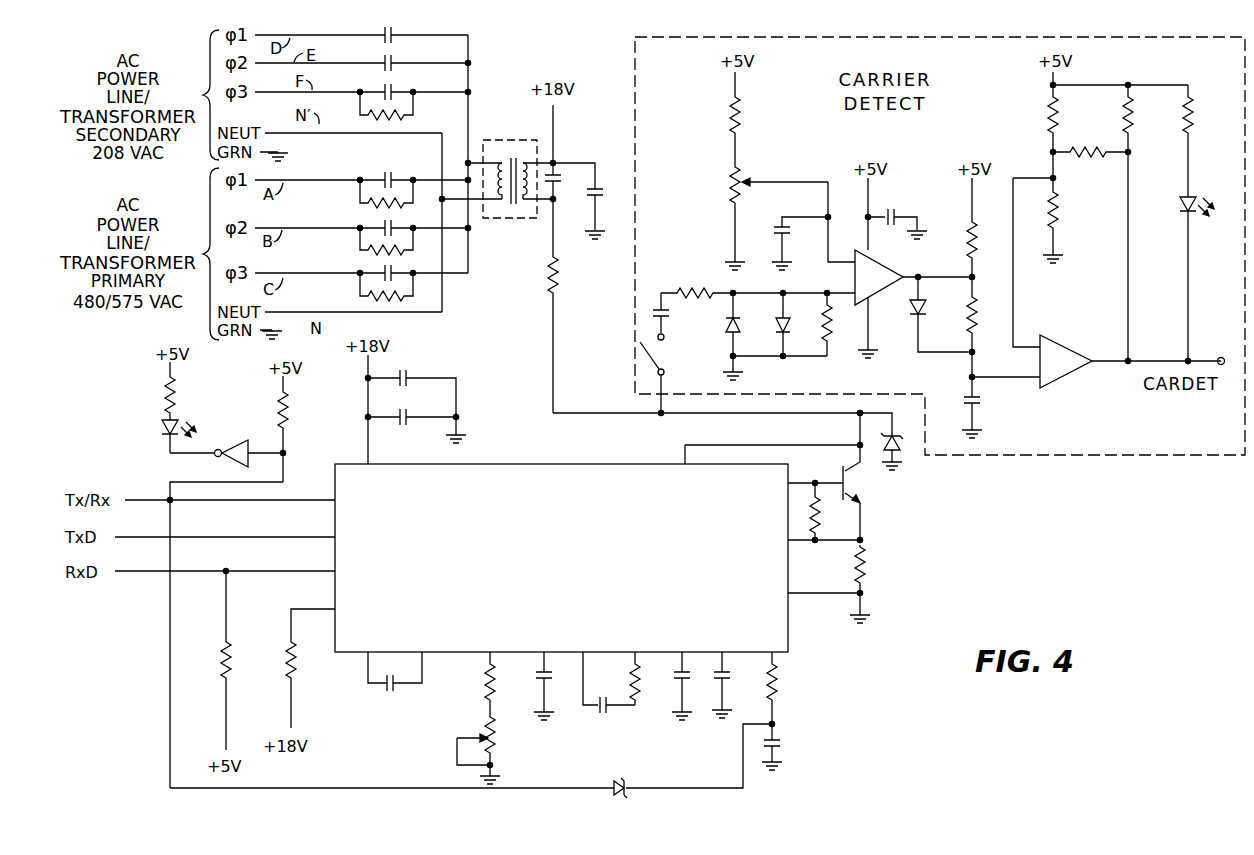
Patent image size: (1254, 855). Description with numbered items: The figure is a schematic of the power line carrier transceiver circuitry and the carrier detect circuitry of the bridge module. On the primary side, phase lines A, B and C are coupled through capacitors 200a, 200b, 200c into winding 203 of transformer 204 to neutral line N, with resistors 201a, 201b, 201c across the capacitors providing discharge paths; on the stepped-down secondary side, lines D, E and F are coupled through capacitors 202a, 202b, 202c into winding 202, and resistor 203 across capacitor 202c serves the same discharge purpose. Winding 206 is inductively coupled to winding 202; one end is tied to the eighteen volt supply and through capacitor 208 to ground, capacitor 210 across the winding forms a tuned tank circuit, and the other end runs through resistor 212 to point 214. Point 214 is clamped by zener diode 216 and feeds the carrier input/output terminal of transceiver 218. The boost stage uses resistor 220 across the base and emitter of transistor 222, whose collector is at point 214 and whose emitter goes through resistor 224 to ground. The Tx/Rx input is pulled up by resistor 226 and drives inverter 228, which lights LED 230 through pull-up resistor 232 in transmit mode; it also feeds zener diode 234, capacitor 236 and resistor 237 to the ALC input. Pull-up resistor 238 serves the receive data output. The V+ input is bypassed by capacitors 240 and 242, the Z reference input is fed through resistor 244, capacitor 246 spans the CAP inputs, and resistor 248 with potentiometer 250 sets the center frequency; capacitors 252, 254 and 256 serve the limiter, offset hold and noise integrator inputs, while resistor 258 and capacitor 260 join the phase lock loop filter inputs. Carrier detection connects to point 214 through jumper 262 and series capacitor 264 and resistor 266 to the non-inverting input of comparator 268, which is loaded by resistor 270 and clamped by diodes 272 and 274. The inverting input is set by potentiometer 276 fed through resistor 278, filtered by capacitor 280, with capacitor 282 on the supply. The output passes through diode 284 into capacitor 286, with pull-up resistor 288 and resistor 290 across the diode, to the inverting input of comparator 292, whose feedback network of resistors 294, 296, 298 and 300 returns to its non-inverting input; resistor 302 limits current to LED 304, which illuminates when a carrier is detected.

The capacitor 200a is at (391, 172).
The capacitor 200b is at (384, 226).
The capacitor 200c is at (384, 271).
The resistor 201a is at (365, 203).
The resistor 201b is at (364, 251).
The resistor 201c is at (364, 297).
The winding 202 is at (498, 158).
The capacitor 202a is at (394, 38).
The capacitor 202b is at (394, 66).
The capacitor 202c is at (386, 88).
The winding 203 is at (414, 115).
The transformer 204 is at (493, 222).
The winding 206 is at (527, 203).
The capacitor 208 is at (592, 197).
The capacitor 210 is at (558, 172).
The resistor 212 is at (560, 274).
The point 214 is at (660, 416).
The zener diode 216 is at (905, 468).
The power line carrier transceiver 218 is at (556, 463).
The resistor 220 is at (820, 515).
The transistor 222 is at (853, 483).
The resistor 224 is at (870, 565).
The resistor 226 is at (290, 412).
The inverter 228 is at (236, 440).
The LED 230 is at (160, 428).
The pull-up resistor 232 is at (178, 396).
The zener diode 234 is at (628, 782).
The capacitor 236 is at (782, 742).
The resistor 237 is at (782, 682).
The pull-up resistor 238 is at (222, 662).
The capacitor 240 is at (404, 408).
The capacitor 242 is at (404, 368).
The resistor 244 is at (296, 672).
The capacitor 246 is at (391, 693).
The resistor 248 is at (485, 672).
The potentiometer 250 is at (498, 742).
The capacitor 252 is at (538, 684).
The capacitor 254 is at (684, 678).
The capacitor 256 is at (725, 680).
The resistor 258 is at (632, 668).
The capacitor 260 is at (604, 715).
The switch or jumper 262 is at (658, 357).
The capacitor 264 is at (655, 310).
The resistor 266 is at (692, 290).
The comparator 268 is at (880, 302).
The resistor 270 is at (833, 348).
The diode 272 is at (727, 326).
The diode 274 is at (776, 326).
The potentiometer 276 is at (728, 190).
The resistor 278 is at (730, 112).
The capacitor 280 is at (778, 228).
The capacitor 282 is at (896, 210).
The diode 284 is at (928, 306).
The capacitor 286 is at (980, 402).
The pull-up resistor 288 is at (968, 235).
The resistor 290 is at (980, 325).
The comparator 292 is at (1062, 348).
The resistor 294 is at (1060, 204).
The resistor 296 is at (1047, 112).
The resistor 298 is at (1094, 158).
The resistor 300 is at (1123, 112).
The current limiting resistor 302 is at (1195, 112).
The LED 304 is at (1194, 198).